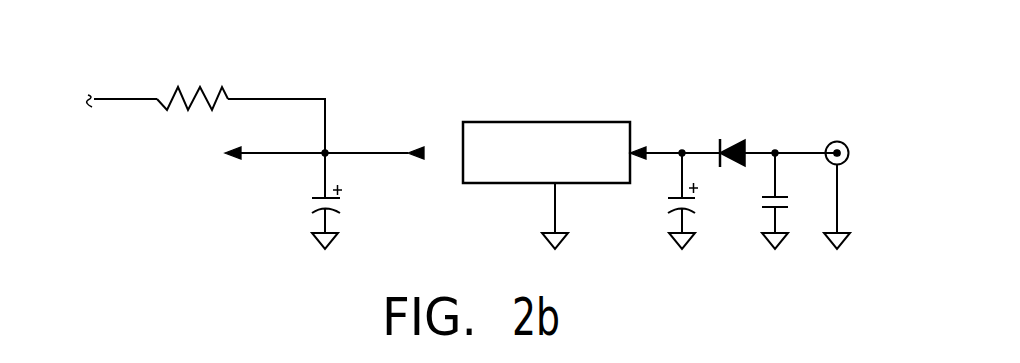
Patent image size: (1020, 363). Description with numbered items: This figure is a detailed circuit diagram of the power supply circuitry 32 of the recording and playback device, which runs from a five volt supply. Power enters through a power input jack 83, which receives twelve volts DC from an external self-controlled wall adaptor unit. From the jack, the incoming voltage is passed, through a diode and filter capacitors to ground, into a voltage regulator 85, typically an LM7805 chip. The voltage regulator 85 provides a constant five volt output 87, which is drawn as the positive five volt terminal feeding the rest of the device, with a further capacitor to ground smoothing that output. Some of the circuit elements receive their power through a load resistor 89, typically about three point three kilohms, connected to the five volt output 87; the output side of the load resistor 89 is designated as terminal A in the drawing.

The power supply circuitry 32 is at (743, 55).
The power input jack 83 is at (845, 157).
The voltage regulator 85 is at (498, 122).
The 5 volt output 87 is at (270, 157).
The load resistor 89 is at (192, 85).